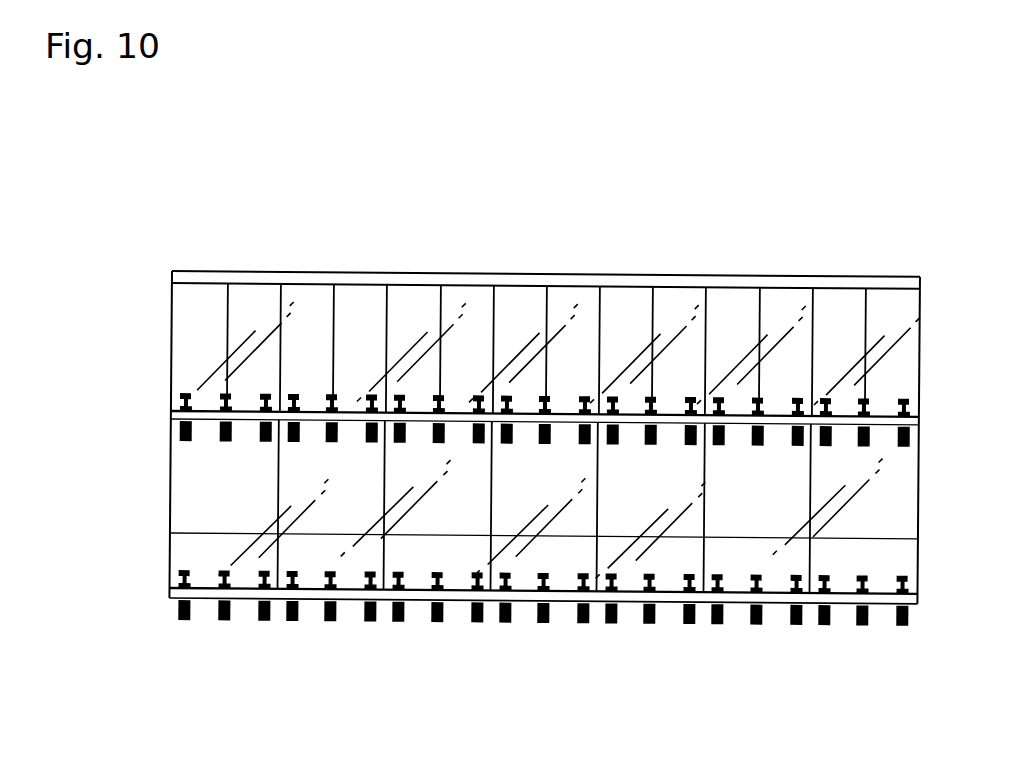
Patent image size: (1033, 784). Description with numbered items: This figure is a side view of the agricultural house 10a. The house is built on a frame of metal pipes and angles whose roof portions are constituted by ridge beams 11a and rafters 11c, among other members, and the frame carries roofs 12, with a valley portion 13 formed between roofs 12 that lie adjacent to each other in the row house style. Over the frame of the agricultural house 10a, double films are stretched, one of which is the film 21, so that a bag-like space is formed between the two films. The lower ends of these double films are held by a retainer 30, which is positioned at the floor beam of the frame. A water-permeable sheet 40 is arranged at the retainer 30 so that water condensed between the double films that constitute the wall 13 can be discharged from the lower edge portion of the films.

The agricultural house 10a is at (301, 219).
The ridge beam 11a is at (521, 273).
The rafter 11c is at (226, 320).
The roof 12 is at (835, 319).
The valley portion 13 is at (752, 498).
The double film 21 is at (731, 305).
The retainer 30 is at (192, 413).
The water-permeable sheet 40 is at (372, 444).